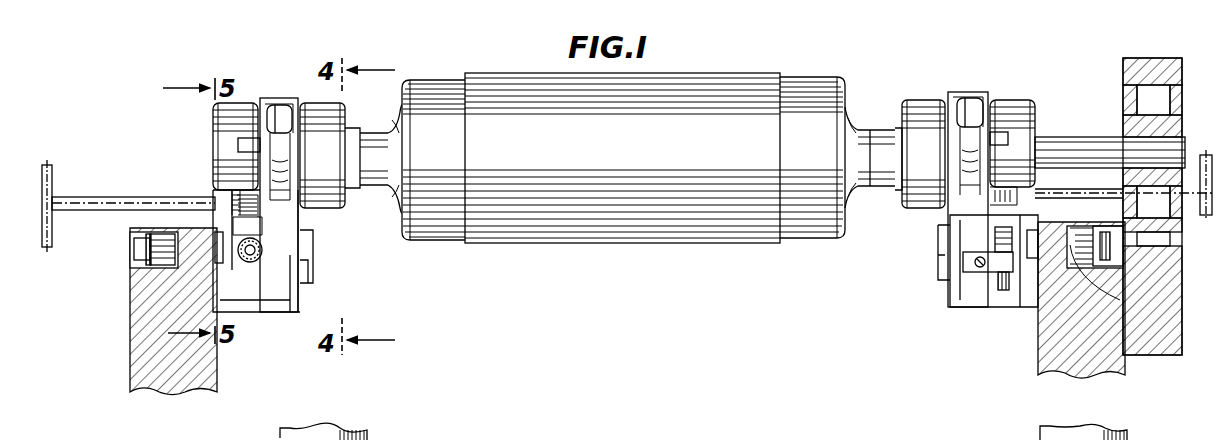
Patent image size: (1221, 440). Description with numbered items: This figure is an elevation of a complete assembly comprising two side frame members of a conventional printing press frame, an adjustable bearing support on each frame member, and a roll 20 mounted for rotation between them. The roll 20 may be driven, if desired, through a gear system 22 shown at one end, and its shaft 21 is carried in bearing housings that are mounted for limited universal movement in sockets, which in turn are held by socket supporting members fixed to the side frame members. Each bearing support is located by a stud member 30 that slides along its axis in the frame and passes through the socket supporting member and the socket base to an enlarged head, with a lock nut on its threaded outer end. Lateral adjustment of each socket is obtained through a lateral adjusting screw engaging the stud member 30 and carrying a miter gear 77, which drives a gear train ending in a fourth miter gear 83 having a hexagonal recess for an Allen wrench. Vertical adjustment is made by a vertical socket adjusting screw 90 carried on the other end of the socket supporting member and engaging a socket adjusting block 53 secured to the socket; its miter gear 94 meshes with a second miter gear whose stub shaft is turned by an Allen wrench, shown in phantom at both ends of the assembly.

The roll 20 is at (610, 243).
The shaft 21 is at (1072, 137).
The gear system 22 is at (1120, 78).
The stud member 30 is at (165, 234).
The socket adjusting block 53 is at (963, 252).
The miter gear 77 is at (242, 262).
The fourth miter gear 83 is at (240, 190).
The vertical socket adjusting screw 90 is at (1003, 292).
The miter gear 94 is at (990, 196).